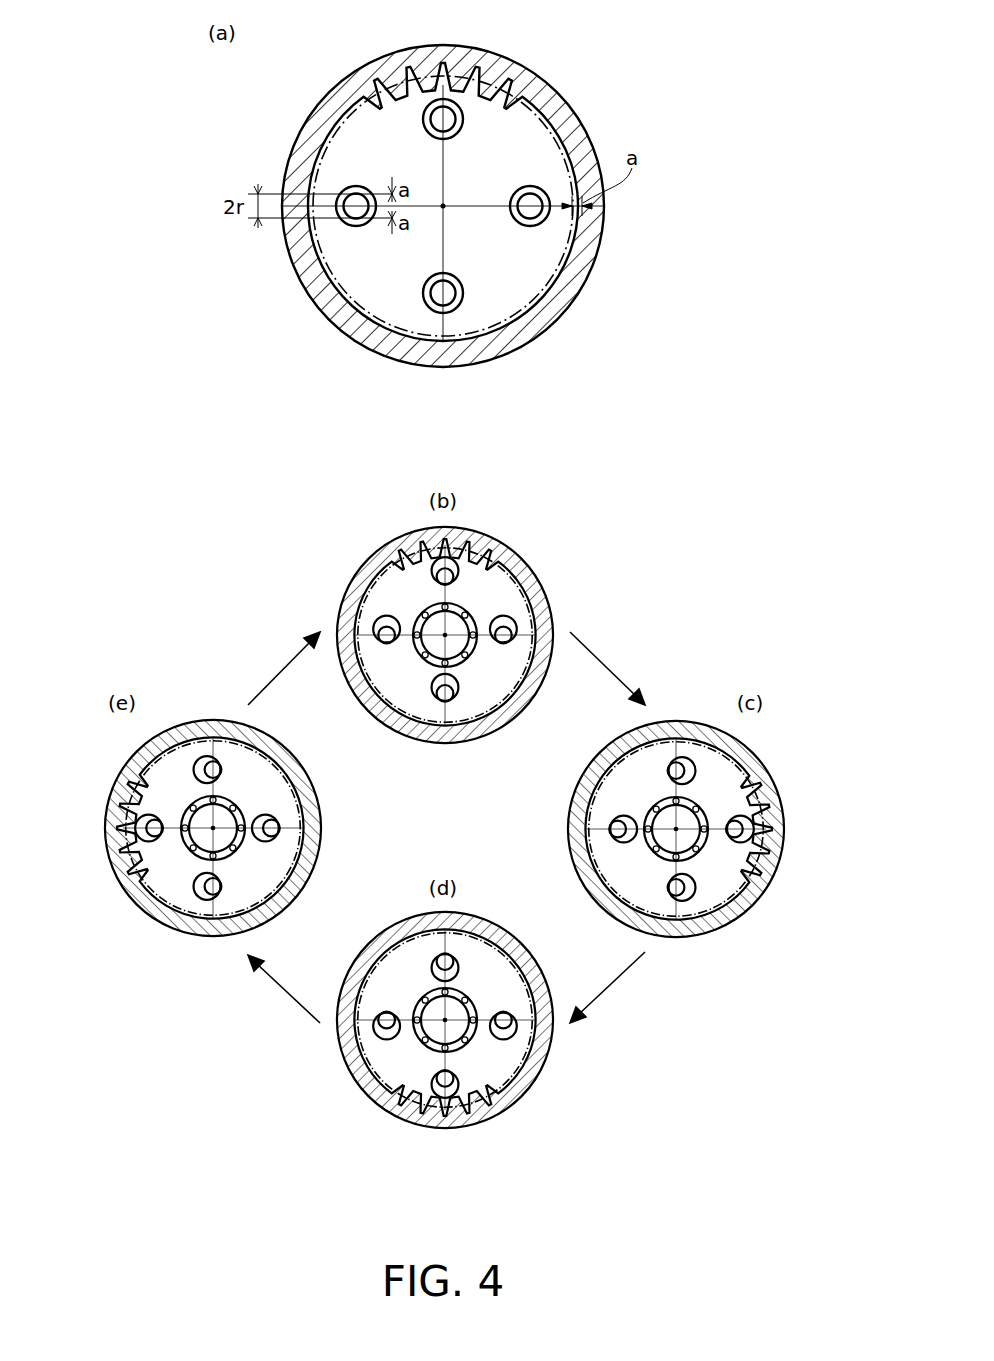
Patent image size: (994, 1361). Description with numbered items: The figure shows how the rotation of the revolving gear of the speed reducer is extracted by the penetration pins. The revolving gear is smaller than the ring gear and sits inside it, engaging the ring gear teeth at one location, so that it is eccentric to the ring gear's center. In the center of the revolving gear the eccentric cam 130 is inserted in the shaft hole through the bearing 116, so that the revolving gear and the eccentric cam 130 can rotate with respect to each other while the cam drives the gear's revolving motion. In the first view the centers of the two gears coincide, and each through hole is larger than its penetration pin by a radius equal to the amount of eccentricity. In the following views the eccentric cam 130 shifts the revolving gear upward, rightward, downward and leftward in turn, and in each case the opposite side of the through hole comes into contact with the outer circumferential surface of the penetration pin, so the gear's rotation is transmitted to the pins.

The bearing 116 is at (414, 614).
The eccentric cam 130 is at (430, 598).